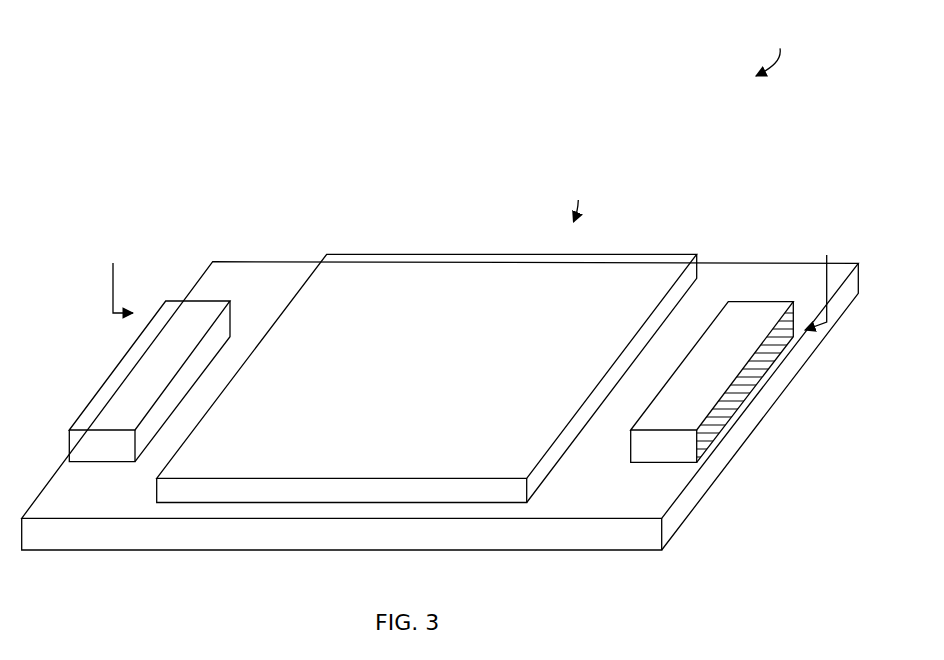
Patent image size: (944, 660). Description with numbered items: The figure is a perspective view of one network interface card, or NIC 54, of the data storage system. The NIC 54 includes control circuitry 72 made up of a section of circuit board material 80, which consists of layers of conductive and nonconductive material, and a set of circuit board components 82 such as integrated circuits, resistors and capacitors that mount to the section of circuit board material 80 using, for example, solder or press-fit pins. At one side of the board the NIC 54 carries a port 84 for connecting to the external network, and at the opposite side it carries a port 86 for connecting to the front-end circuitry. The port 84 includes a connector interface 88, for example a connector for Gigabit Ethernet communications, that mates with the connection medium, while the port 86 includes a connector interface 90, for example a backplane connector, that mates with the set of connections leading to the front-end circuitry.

The network interface card 54 is at (775, 49).
The control circuitry 72 is at (578, 198).
The section of circuit board material 80 is at (278, 272).
The set of circuit board components 82 is at (427, 378).
The port 84 is at (215, 308).
The port 86 is at (743, 307).
The connector interface 88 is at (117, 275).
The connector interface 90 is at (821, 281).